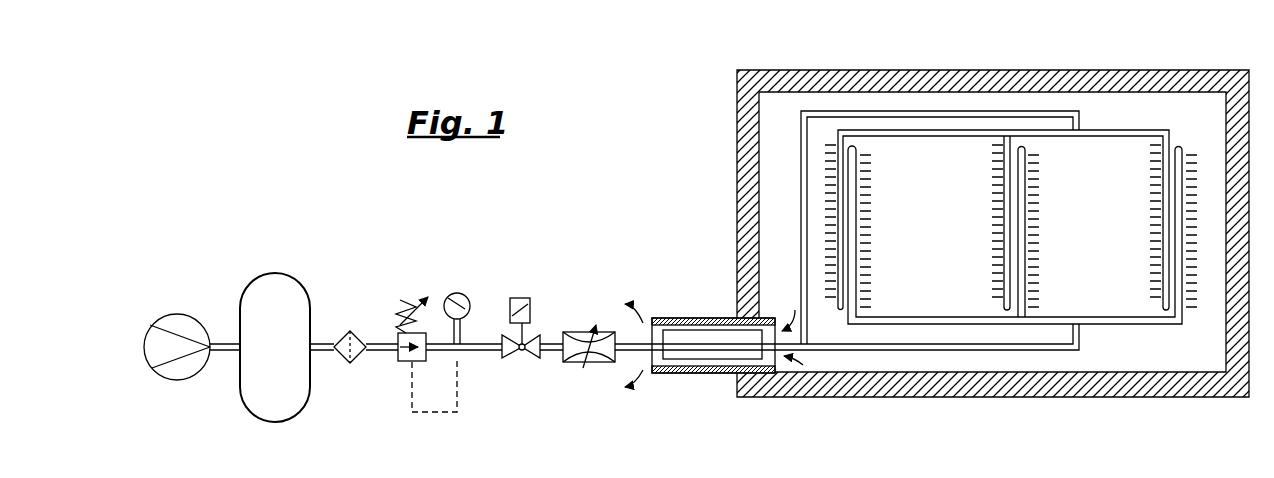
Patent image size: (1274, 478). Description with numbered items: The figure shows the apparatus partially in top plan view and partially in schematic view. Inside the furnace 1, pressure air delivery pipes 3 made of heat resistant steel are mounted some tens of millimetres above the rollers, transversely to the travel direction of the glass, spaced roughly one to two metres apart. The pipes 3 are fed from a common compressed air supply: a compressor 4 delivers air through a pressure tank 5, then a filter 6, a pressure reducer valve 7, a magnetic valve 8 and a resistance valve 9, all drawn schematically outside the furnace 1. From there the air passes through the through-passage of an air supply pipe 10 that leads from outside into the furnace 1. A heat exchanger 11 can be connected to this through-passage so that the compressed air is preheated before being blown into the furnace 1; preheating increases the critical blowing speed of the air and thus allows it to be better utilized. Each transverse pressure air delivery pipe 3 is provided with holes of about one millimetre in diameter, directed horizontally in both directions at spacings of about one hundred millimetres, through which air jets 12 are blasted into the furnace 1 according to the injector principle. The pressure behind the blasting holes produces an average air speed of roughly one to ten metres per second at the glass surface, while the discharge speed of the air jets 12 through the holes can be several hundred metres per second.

The furnace 1 is at (735, 127).
The pressure air delivery pipes 3 is at (840, 203).
The compressor 4 is at (180, 323).
The pressure tank 5 is at (292, 297).
The filter 6 is at (357, 330).
The pressure reducer valve 7 is at (405, 355).
The magnetic valve 8 is at (525, 355).
The resistance valve 9 is at (585, 332).
The air supply pipe 10 is at (900, 344).
The heat exchanger 11 is at (687, 330).
The air jets 12 is at (863, 236).